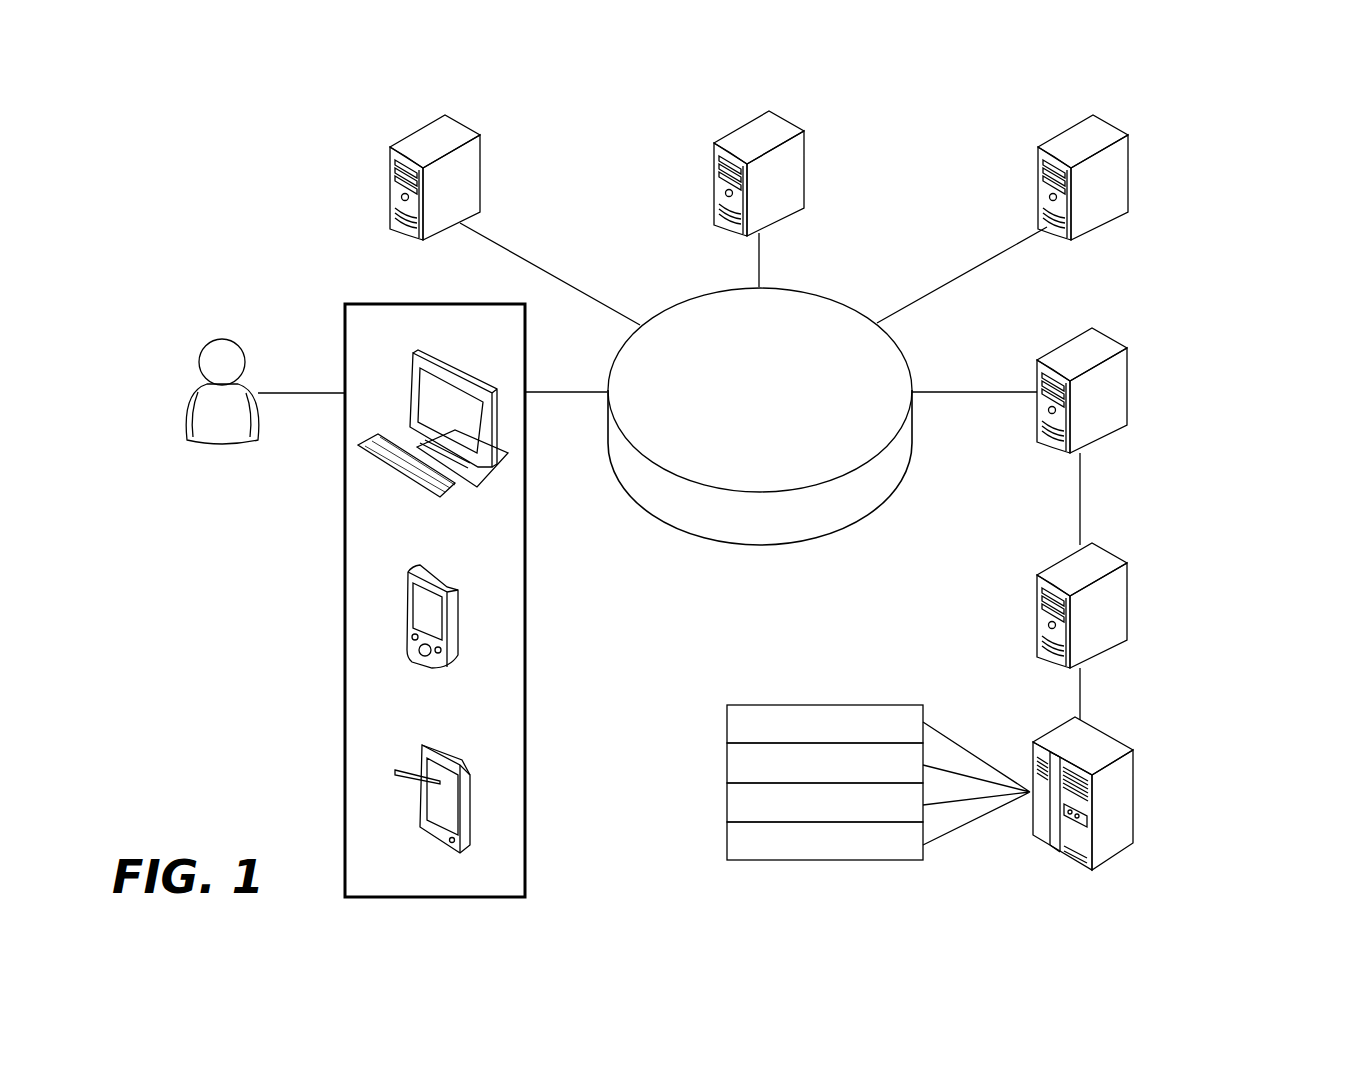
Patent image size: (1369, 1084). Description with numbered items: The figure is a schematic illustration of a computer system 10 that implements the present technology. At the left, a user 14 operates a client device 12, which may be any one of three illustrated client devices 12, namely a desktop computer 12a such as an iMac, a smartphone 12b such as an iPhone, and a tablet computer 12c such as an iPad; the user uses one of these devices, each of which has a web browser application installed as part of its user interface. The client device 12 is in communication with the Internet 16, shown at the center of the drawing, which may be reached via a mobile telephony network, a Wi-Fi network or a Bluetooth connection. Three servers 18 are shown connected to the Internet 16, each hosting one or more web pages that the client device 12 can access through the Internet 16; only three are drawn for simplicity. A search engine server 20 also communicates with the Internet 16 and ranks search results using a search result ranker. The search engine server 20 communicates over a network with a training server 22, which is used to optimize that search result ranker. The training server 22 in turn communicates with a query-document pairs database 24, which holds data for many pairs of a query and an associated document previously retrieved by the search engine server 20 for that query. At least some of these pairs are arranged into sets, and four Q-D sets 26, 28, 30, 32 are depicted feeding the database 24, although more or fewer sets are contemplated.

The computer system 10 is at (1254, 196).
The client device 12 is at (380, 335).
The desktop computer 12a is at (497, 465).
The smartphone 12b is at (453, 600).
The tablet computer 12c is at (466, 788).
The user 14 is at (218, 444).
The Internet 16 is at (771, 401).
The servers 18 is at (473, 172).
The search engine server 20 is at (1120, 392).
The training server 22 is at (1118, 598).
The query-document (Q-D) pairs database 24 is at (1130, 802).
The Q-D set 26 is at (727, 731).
The Q-D set 28 is at (727, 769).
The Q-D set 30 is at (727, 808).
The Q-D set 32 is at (727, 847).